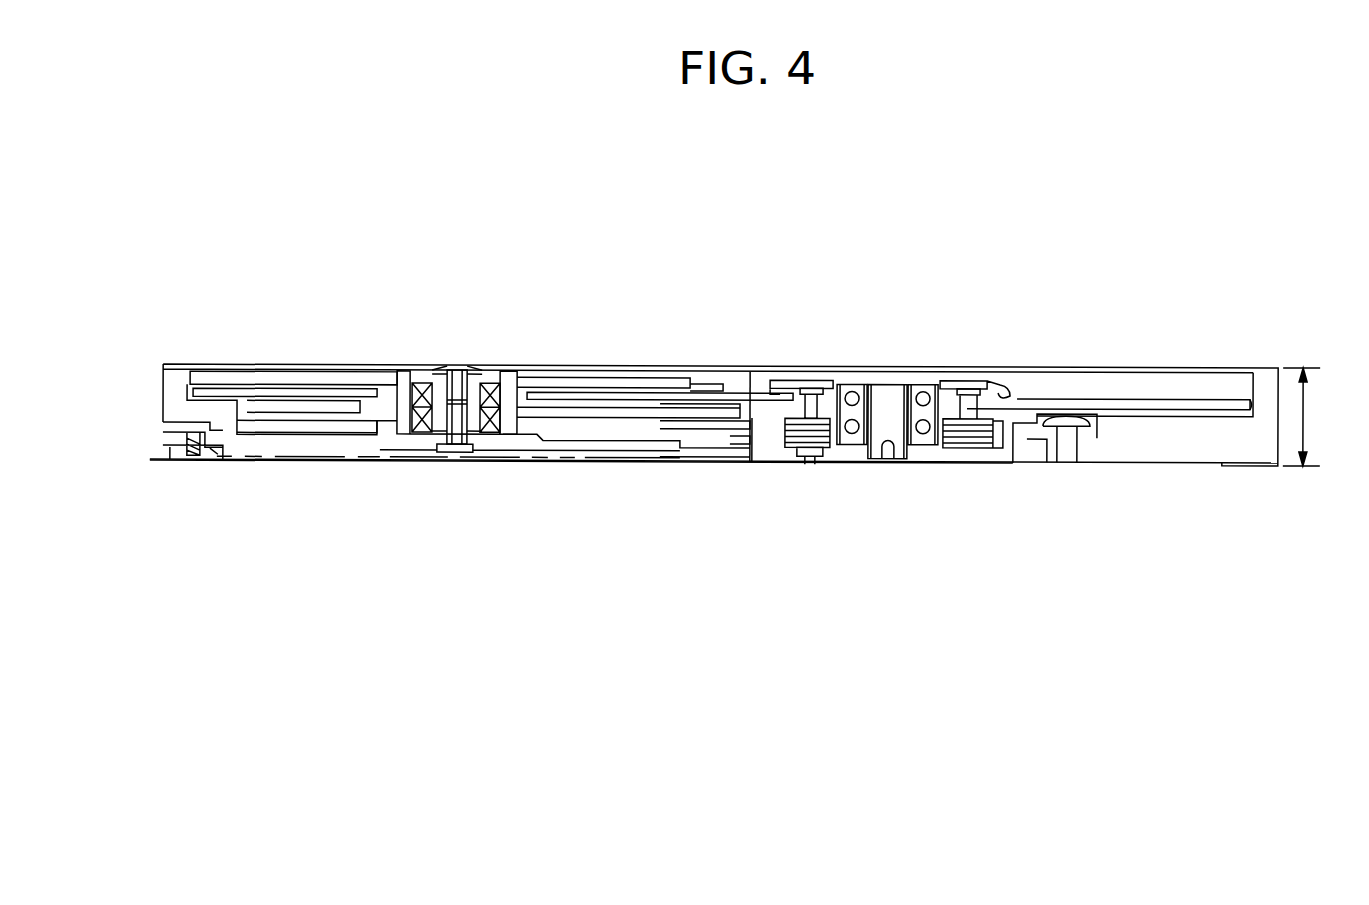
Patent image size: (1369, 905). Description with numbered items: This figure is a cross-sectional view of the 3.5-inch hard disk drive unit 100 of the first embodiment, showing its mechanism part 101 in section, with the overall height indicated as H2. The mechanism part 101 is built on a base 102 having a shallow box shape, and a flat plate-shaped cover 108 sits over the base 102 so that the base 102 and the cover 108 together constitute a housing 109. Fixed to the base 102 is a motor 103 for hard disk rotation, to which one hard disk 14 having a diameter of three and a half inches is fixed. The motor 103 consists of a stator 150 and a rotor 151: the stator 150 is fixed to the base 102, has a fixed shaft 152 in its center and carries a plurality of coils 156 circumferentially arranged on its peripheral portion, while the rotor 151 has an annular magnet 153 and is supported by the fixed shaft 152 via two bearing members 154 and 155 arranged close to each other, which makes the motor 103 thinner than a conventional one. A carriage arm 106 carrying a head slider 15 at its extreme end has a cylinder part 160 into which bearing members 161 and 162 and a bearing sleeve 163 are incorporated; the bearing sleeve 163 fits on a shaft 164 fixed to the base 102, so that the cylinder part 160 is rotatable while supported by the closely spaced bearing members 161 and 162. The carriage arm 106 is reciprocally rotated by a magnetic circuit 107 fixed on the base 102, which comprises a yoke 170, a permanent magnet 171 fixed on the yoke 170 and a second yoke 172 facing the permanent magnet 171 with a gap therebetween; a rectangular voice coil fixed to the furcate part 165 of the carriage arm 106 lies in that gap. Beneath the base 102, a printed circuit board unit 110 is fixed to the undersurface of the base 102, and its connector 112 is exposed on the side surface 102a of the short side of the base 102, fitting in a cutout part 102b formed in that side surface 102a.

The hard disk drive unit 100 is at (1250, 271).
The mechanism part 101 is at (1240, 357).
The base 102 is at (1143, 465).
The side surface 102a is at (163, 397).
The cutout part 102b is at (160, 431).
The motor 103 is at (854, 462).
The carriage arm 106 is at (590, 379).
The magnetic circuit 107 is at (212, 362).
The cover 108 is at (1130, 371).
The housing 109 is at (1198, 465).
The printed circuit board unit 110 is at (386, 459).
The connector 112 is at (160, 460).
The hard disk 14 is at (1178, 397).
The head slider 15 is at (752, 372).
The stator 150 is at (950, 450).
The rotor 151 is at (1028, 392).
The fixed shaft 152 is at (887, 394).
The annular magnet 153 is at (1008, 452).
The bearing member 154 is at (935, 394).
The bearing member 155 is at (936, 450).
The coils 156 is at (972, 450).
The cylinder part 160 is at (517, 384).
The bearing member 161 is at (492, 394).
The bearing member 162 is at (487, 436).
The bearing sleeve 163 is at (420, 395).
The shaft 164 is at (458, 389).
The furcate part 165 is at (303, 396).
The yoke 170 is at (276, 434).
The permanent magnet 171 is at (305, 414).
The yoke 172 is at (246, 374).
The height H2 is at (1313, 417).